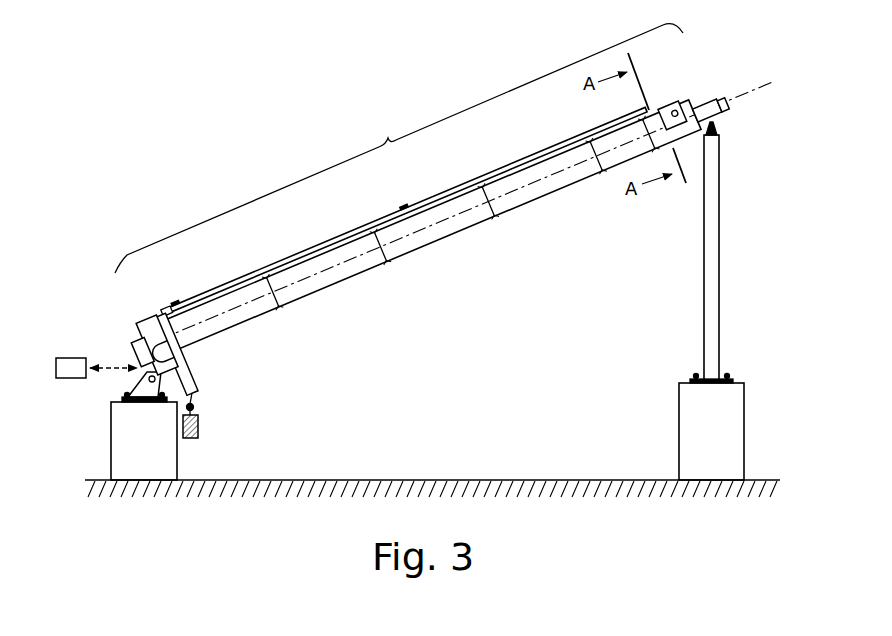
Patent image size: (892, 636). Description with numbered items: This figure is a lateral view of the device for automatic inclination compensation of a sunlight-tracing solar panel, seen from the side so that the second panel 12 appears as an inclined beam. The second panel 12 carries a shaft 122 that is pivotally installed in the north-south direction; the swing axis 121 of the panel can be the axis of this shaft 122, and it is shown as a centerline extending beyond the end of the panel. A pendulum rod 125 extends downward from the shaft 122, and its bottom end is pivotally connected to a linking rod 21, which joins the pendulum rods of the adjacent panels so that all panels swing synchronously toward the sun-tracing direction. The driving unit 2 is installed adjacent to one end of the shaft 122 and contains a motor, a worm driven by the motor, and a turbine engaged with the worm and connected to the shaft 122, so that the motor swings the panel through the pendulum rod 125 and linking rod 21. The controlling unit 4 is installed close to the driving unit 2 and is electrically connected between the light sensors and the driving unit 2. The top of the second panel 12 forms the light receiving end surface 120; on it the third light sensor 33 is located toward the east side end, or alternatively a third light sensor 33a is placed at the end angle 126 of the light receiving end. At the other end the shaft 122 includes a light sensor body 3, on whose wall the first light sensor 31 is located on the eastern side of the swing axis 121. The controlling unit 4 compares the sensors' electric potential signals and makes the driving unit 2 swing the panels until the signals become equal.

The light receiving end surface 120 is at (399, 148).
The second panel 12 is at (425, 228).
The shaft 122 is at (454, 215).
The third light sensor 33 is at (404, 210).
The third light sensor 33a is at (175, 303).
The end angle 126 is at (167, 311).
The light sensor body 3 is at (672, 115).
The first light sensor 31 is at (711, 109).
The swing axis 121 is at (747, 95).
The pendulum rod 125 is at (176, 354).
The linking rod 21 is at (200, 428).
The driving unit 2 is at (151, 347).
The controlling unit 4 is at (72, 380).